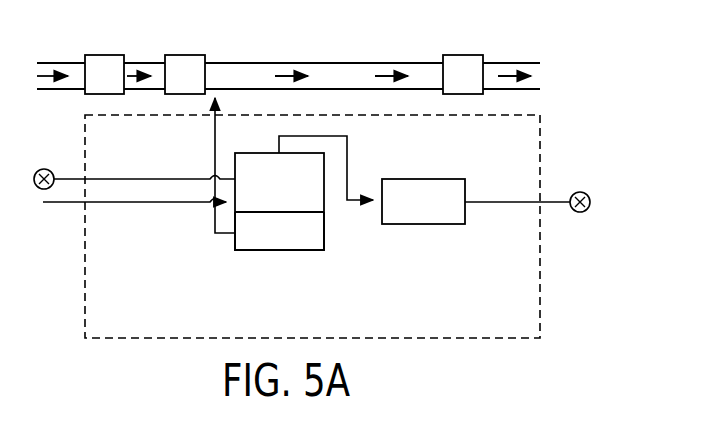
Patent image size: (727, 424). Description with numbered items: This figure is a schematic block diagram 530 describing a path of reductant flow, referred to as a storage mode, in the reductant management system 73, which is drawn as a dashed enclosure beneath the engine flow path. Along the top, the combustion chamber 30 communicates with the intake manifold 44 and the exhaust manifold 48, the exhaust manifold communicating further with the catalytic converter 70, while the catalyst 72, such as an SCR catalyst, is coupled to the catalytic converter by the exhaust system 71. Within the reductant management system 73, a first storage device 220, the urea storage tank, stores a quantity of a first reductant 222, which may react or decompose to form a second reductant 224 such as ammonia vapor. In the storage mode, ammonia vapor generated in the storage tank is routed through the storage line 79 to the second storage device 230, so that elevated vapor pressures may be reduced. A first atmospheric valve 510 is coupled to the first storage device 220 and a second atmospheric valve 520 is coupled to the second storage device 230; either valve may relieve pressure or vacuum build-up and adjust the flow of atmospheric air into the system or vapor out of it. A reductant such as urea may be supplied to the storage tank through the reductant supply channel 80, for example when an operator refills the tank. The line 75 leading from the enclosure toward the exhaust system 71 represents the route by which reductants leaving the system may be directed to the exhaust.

The combustion chamber 30 is at (105, 55).
The intake manifold 44 is at (70, 63).
The exhaust manifold 48 is at (140, 63).
The catalytic converter 70 is at (187, 55).
The exhaust system 71 is at (293, 63).
The catalyst 72 is at (464, 55).
The reductant management system 73 is at (540, 270).
The control output line 75 is at (215, 131).
The storage line 79 is at (347, 158).
The reductant supply channel 80 is at (127, 204).
The first storage device 220 is at (278, 266).
The first reductant 222 is at (237, 242).
The second reductant 224 is at (315, 203).
The second storage device 230 is at (424, 226).
The first atmospheric valve 510 is at (46, 169).
The second atmospheric valve 520 is at (583, 191).
The diagram 530 is at (612, 112).